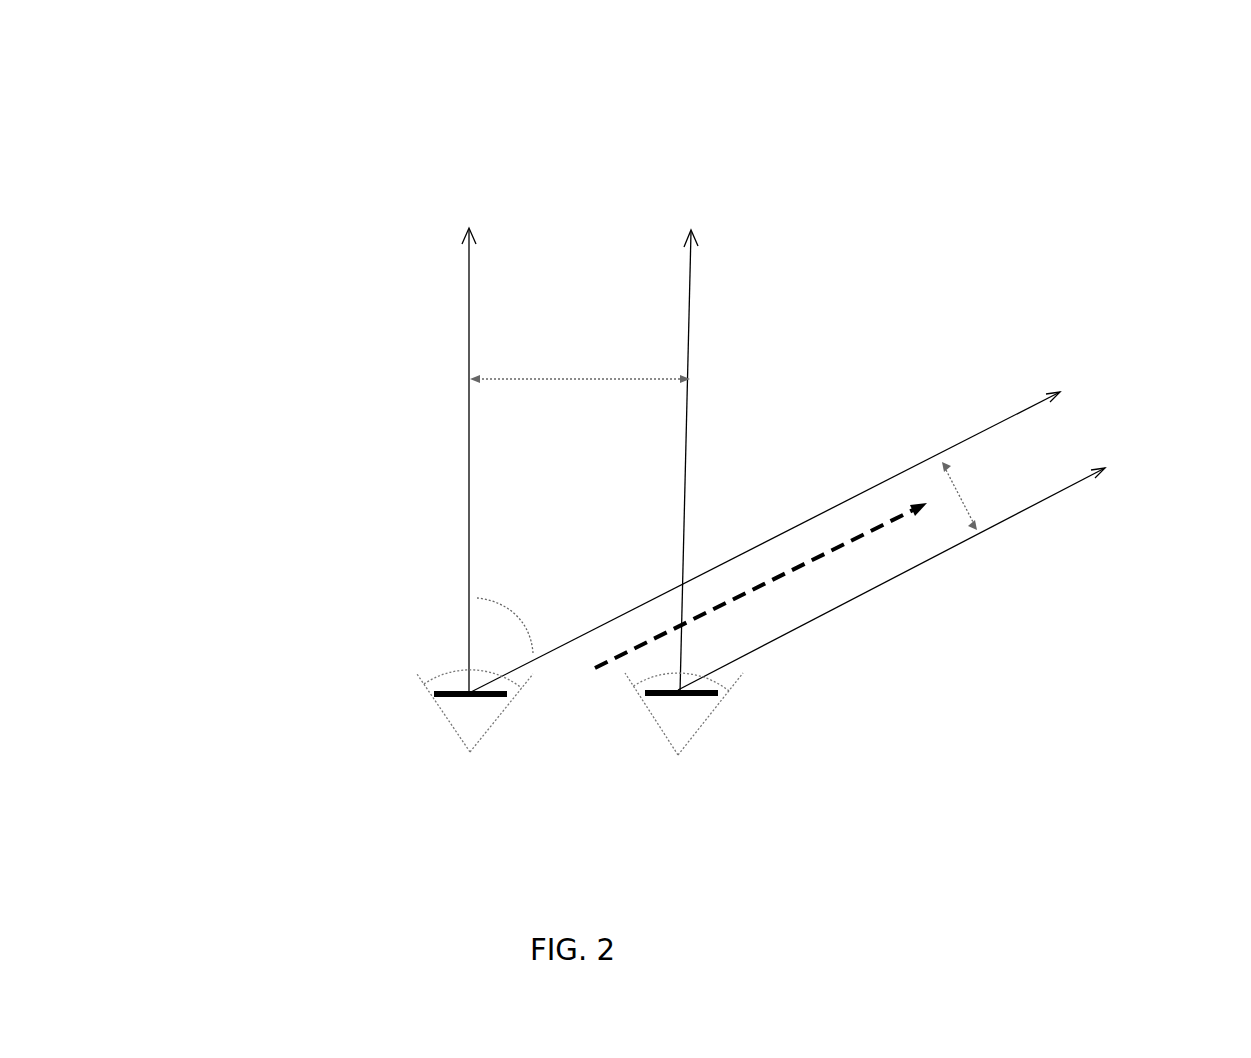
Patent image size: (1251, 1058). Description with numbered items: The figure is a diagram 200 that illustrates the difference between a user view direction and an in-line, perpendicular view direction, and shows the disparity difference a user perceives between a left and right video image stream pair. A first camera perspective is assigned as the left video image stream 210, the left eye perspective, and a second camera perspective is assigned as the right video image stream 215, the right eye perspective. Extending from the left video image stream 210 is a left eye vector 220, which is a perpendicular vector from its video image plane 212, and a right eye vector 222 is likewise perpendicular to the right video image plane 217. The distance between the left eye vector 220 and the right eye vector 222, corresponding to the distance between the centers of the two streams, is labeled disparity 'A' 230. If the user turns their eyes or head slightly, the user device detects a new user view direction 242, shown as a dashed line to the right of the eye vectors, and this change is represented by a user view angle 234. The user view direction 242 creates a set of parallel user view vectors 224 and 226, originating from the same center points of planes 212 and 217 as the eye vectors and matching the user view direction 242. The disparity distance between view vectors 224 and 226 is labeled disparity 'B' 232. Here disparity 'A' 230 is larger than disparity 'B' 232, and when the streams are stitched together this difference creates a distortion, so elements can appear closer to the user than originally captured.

The diagram 200 is at (190, 110).
The left video image stream 210 is at (467, 736).
The video image plane 212 is at (430, 693).
The right video image stream 215 is at (680, 741).
The right video image plane 217 is at (721, 694).
The left eye vector 220 is at (466, 267).
The right eye vector 222 is at (694, 280).
The user view vector 224 is at (1032, 400).
The user view vector 226 is at (1094, 493).
The disparity 'A' 230 is at (554, 329).
The disparity 'B' 232 is at (1026, 462).
The user view angle 234 is at (505, 624).
The user view direction 242 is at (878, 545).